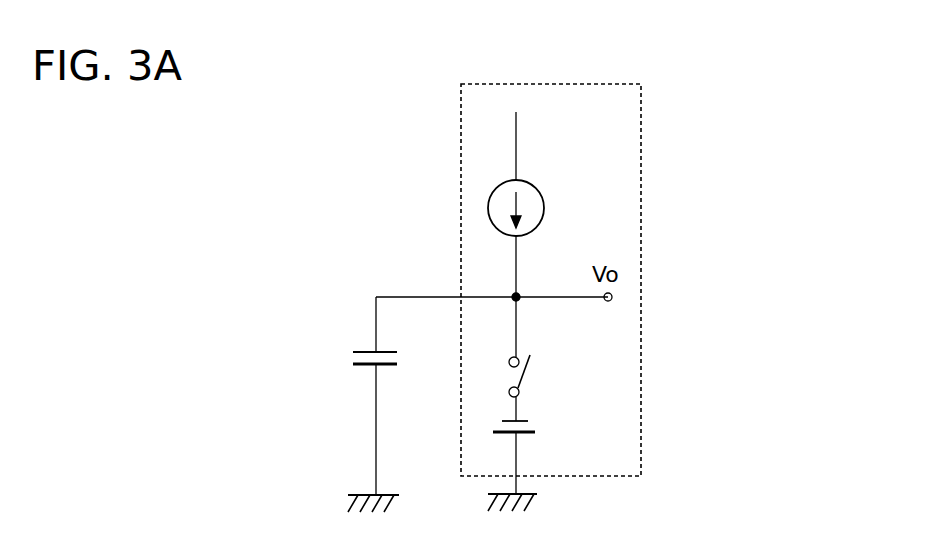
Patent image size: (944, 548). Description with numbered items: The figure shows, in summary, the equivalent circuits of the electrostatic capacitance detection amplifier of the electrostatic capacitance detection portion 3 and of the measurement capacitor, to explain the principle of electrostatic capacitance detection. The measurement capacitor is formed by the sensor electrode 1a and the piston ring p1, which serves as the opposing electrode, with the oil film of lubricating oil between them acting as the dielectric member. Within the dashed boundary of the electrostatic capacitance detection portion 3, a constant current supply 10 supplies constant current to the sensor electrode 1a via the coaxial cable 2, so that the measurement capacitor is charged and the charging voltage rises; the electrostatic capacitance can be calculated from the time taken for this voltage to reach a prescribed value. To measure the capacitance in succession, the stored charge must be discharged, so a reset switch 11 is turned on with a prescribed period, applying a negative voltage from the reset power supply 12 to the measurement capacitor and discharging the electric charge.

The electrostatic capacitance detection portion 3 is at (583, 84).
The coaxial cable 2 is at (407, 297).
The constant current supply 10 is at (537, 188).
The reset switch 11 is at (524, 372).
The reset power supply 12 is at (525, 432).
The sensor electrode 1a is at (363, 351).
The piston ring p1 is at (362, 366).